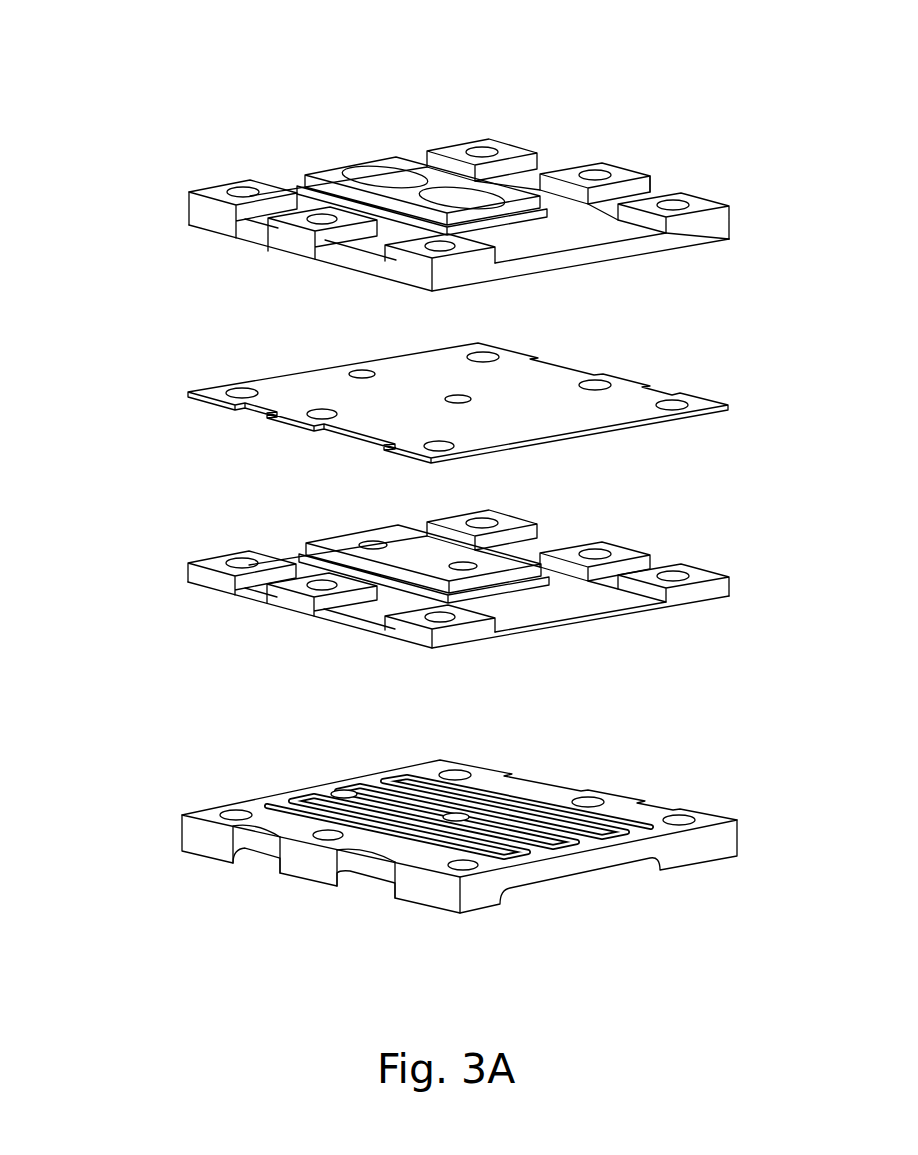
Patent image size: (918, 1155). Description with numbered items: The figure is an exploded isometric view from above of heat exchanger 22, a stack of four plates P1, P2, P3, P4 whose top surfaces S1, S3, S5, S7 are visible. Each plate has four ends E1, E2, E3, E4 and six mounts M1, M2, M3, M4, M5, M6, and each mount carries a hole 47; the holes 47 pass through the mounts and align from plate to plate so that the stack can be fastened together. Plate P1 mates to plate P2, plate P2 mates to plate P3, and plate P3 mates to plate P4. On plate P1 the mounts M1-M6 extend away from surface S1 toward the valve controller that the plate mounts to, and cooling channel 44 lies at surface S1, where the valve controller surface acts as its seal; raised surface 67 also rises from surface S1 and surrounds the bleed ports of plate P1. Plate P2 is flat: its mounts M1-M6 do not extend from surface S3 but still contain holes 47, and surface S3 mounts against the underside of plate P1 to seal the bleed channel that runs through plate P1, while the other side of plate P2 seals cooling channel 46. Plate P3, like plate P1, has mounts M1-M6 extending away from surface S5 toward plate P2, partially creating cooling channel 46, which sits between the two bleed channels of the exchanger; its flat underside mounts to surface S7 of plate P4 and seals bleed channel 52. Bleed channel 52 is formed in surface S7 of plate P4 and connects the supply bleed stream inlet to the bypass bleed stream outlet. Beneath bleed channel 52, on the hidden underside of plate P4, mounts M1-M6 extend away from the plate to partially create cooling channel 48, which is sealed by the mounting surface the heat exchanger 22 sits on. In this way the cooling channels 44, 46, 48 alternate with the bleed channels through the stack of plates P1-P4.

The heat exchanger 22 is at (190, 67).
The plate P1 is at (454, 200).
The plate P2 is at (461, 400).
The plate P3 is at (501, 589).
The plate P4 is at (499, 858).
The end E1 is at (187, 210).
The end E2 is at (348, 167).
The end E3 is at (623, 164).
The end E4 is at (677, 250).
The surface S1 is at (535, 236).
The surface S3 is at (295, 388).
The surface S5 is at (317, 575).
The surface S7 is at (256, 802).
The mount M1 is at (413, 260).
The mount M2 is at (293, 240).
The mount M3 is at (218, 212).
The mount M4 is at (447, 143).
The mount M5 is at (573, 163).
The mount M6 is at (690, 194).
The cooling channel 44 is at (587, 232).
The cooling channel 46 is at (580, 603).
The holes 47 is at (678, 410).
The cooling channel 48 is at (545, 885).
The bleed channel 52 is at (347, 788).
The raised surface 67 is at (442, 182).